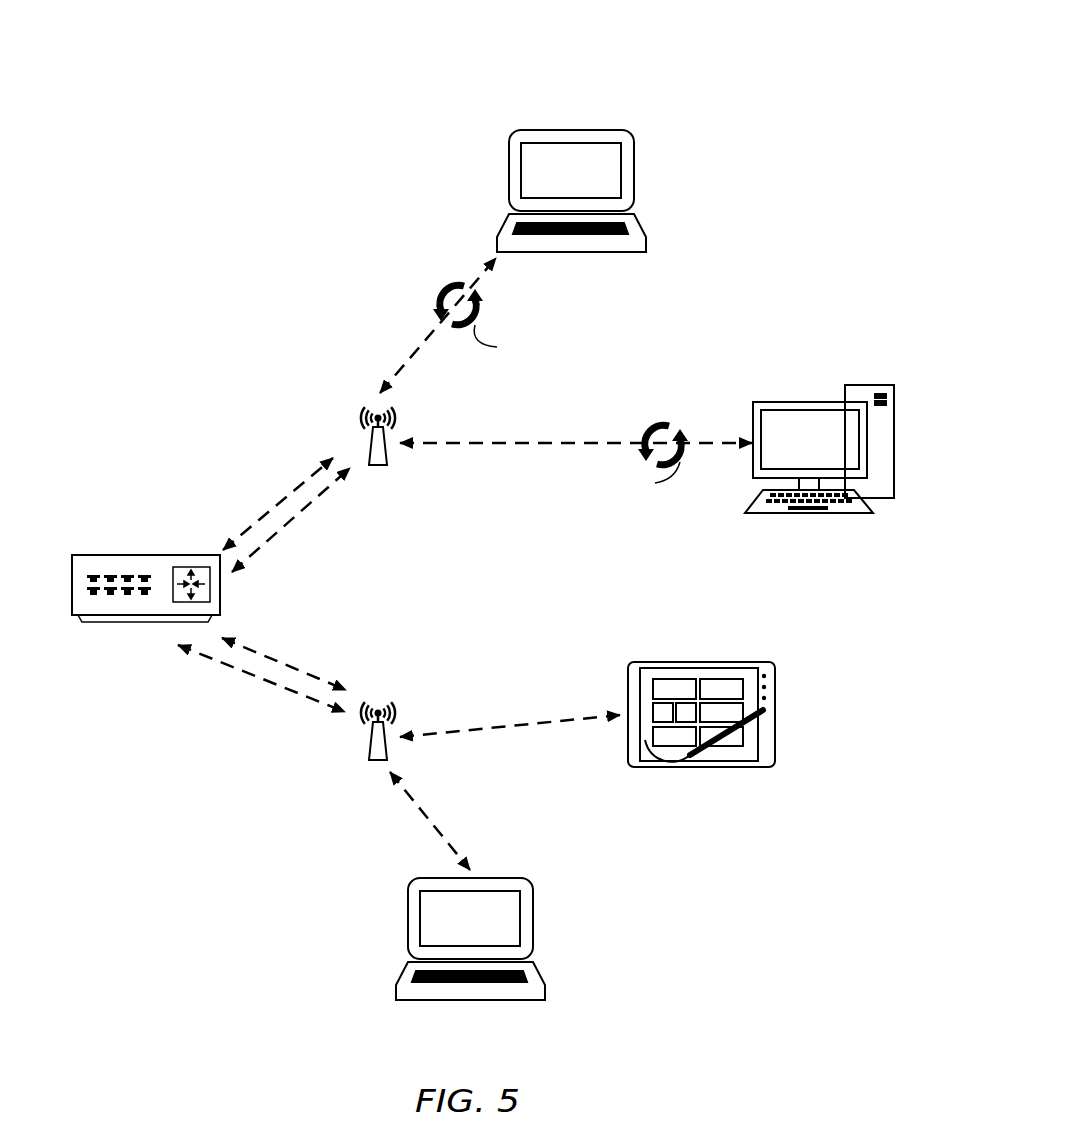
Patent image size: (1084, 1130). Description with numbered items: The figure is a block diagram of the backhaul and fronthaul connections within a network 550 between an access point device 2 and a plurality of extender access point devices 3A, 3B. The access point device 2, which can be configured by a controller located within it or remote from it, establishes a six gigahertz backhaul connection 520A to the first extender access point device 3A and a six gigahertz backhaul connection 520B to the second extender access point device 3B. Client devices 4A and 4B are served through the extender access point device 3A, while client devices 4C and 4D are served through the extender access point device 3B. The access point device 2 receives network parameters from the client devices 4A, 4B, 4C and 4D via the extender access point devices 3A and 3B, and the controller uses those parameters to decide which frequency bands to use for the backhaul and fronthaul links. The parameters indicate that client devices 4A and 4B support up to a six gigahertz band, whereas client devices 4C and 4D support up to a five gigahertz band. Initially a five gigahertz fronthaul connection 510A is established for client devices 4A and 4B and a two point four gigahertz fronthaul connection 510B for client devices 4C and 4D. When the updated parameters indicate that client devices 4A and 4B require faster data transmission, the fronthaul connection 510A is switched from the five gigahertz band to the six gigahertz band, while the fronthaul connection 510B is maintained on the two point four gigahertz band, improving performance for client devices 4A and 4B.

The network 550 is at (684, 39).
The access point device 2 is at (88, 556).
The extender access point device 3A is at (357, 405).
The extender access point device 3B is at (367, 762).
The client device 4A is at (619, 130).
The client device 4B is at (884, 386).
The client device 4C is at (758, 664).
The client device 4D is at (519, 878).
The FH connection 510A is at (418, 348).
The BH connection 520A is at (292, 515).
The FH connection 510B is at (273, 660).
The BH connection 520B is at (235, 670).